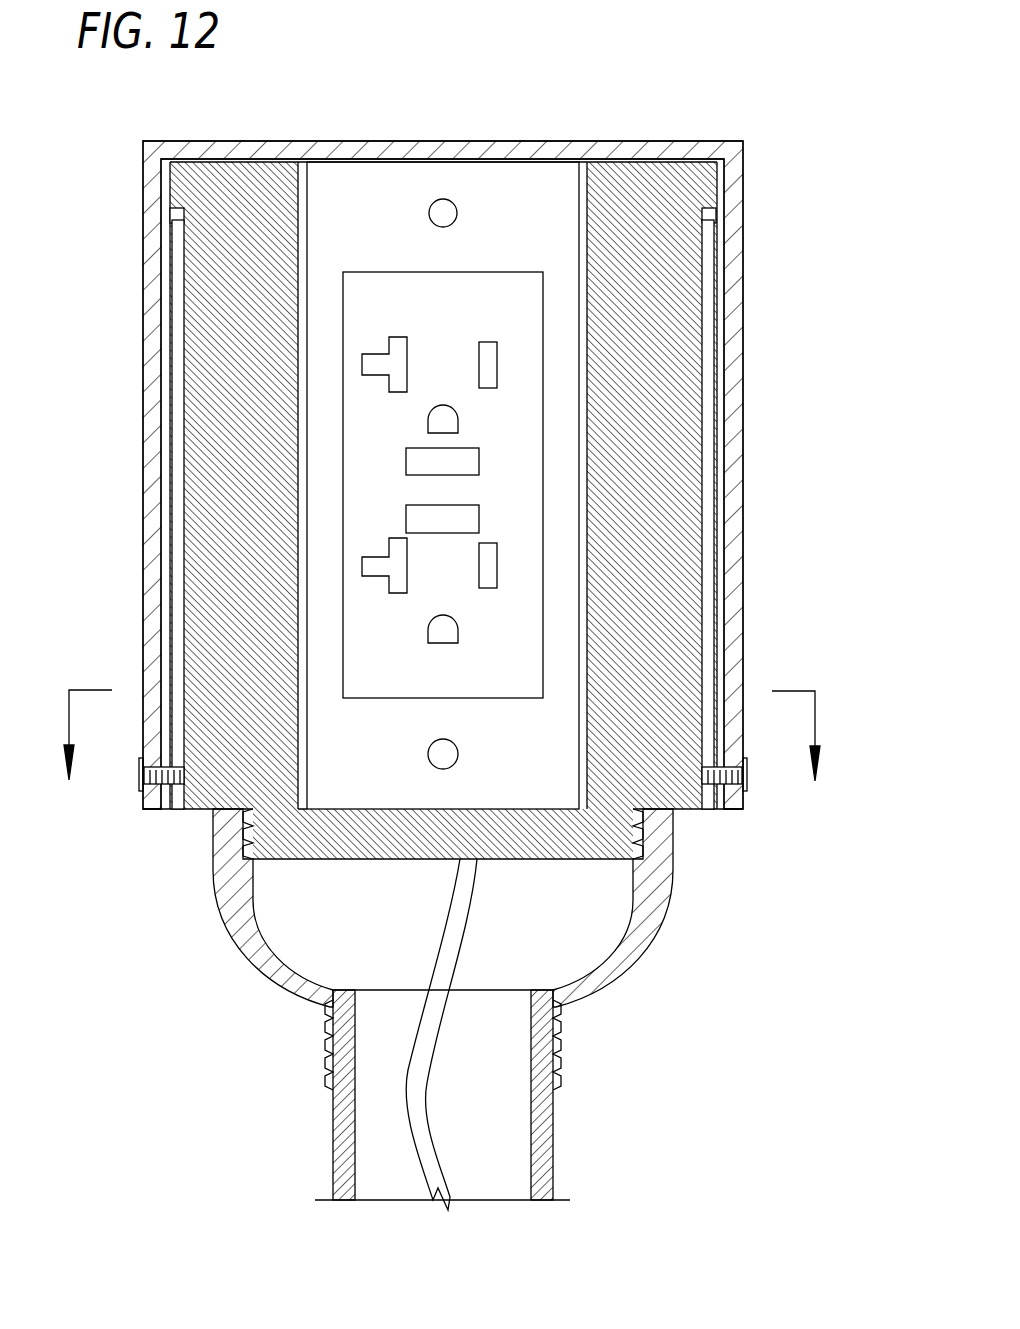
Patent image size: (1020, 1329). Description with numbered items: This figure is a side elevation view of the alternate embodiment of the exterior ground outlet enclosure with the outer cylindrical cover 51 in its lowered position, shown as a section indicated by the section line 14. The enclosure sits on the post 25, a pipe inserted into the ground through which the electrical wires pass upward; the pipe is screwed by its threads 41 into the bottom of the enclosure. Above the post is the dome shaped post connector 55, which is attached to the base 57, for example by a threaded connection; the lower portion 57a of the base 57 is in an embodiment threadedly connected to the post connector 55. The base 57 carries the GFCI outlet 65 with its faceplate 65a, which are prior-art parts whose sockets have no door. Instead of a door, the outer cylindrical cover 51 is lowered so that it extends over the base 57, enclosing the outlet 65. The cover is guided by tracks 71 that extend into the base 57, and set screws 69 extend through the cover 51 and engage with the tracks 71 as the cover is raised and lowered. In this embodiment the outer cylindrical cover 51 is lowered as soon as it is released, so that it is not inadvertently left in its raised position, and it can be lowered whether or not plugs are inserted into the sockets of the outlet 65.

The section line 14- 14 is at (443, 765).
The post 25 is at (333, 1152).
The threads 41 is at (557, 1035).
The outer cylindrical cover 51 is at (742, 454).
The dome shaped post connector 55 is at (237, 977).
The base 57 is at (673, 787).
The lower portion of base 57a is at (283, 847).
The GFCI outlet 65 is at (379, 418).
The faceplate 65a is at (334, 748).
The set screws 69 is at (747, 789).
The tracks 71 is at (707, 626).